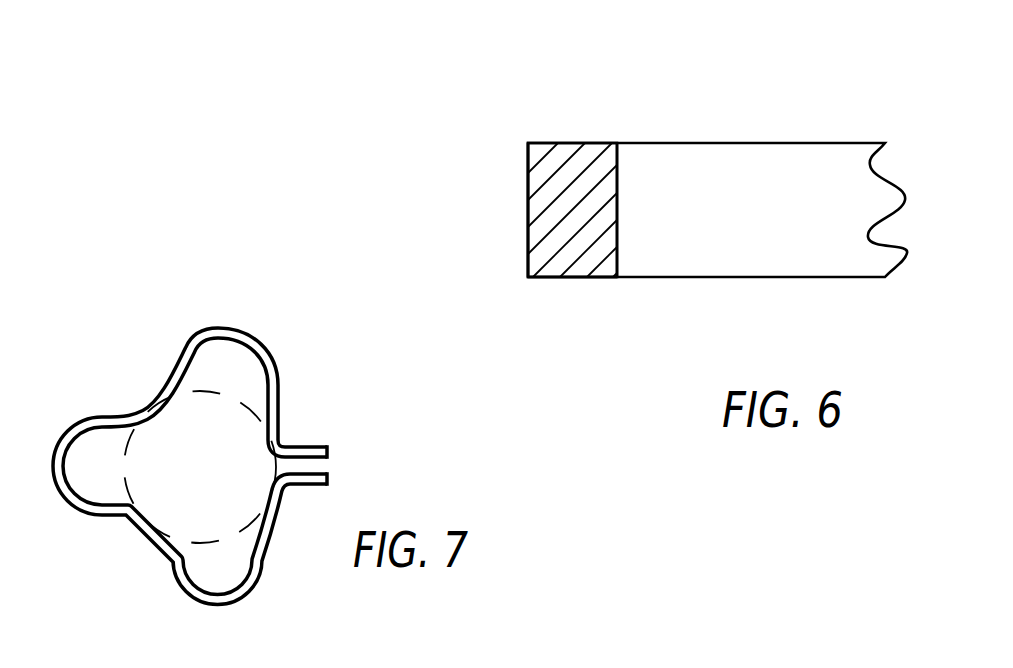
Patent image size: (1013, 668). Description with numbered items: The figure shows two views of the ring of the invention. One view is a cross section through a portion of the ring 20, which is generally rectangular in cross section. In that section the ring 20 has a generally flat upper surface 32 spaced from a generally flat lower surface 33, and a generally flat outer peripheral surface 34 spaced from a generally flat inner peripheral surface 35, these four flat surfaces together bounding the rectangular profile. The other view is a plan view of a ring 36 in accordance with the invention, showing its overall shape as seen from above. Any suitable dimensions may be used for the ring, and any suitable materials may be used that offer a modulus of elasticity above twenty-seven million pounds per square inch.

In FIG. 6, the ring 20 is at (775, 117).
In FIG. 6, the upper surface 32 is at (567, 142).
In FIG. 6, the lower surface 33 is at (578, 277).
In FIG. 6, the outer peripheral surface 34 is at (528, 213).
In FIG. 6, the inner peripheral surface 35 is at (617, 207).
In FIG. 7, the ring 36 is at (137, 339).